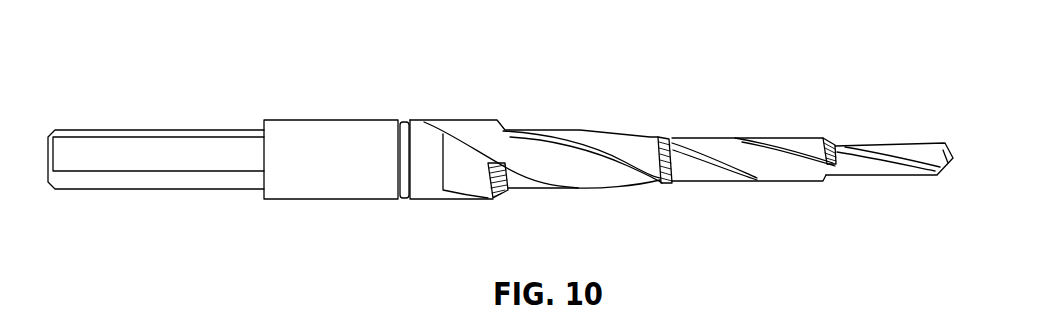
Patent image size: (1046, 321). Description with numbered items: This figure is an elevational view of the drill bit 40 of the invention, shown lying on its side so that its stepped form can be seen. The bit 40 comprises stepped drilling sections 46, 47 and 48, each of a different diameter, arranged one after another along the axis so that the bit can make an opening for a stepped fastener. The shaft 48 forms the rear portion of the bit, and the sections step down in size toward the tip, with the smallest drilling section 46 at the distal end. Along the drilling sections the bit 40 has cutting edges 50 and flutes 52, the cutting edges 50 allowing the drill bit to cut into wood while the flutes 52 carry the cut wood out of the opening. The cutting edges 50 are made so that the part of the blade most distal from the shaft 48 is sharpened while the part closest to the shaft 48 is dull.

The drill bit 40 is at (351, 99).
The stepped drilling section 46 is at (890, 177).
The stepped drilling section 47 is at (760, 185).
The shaft 48 is at (117, 131).
The cutting edges 50 is at (668, 186).
The flutes 52 is at (727, 150).